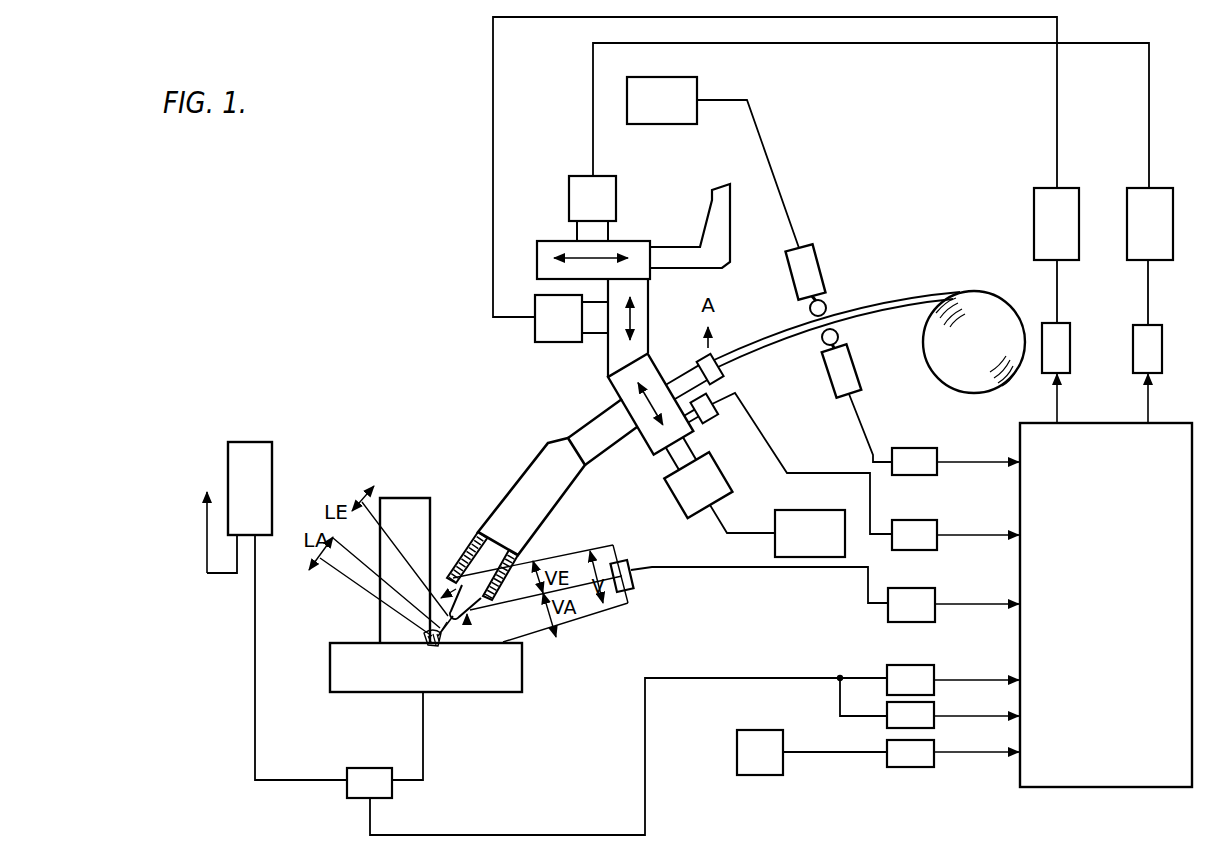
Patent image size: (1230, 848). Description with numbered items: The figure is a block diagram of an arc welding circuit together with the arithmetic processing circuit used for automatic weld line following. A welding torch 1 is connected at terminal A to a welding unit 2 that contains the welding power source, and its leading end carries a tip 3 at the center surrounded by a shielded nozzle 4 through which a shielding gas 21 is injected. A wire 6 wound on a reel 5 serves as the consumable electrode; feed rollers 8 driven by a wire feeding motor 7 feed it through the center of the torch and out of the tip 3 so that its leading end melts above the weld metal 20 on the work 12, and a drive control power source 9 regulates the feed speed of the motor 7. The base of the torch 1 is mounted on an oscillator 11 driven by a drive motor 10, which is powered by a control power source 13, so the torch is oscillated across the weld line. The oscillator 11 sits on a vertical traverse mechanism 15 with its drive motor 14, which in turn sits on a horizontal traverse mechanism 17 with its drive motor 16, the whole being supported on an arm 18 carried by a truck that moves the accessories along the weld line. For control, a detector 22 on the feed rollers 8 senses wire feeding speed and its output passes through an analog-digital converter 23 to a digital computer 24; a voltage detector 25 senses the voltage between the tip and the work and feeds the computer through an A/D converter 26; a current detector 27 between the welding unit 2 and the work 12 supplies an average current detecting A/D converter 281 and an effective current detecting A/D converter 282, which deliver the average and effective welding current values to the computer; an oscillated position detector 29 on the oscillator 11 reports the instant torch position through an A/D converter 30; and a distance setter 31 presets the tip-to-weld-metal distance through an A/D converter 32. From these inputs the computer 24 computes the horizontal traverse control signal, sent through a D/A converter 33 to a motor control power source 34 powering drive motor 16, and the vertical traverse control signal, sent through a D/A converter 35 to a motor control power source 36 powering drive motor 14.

The welding torch 1 is at (606, 420).
The welding unit 2 is at (262, 468).
The tip 3 is at (477, 552).
The shielded nozzle 4 is at (537, 478).
The reel 5 is at (1000, 308).
The wire 6 is at (467, 620).
The wire feeding motor 7 is at (813, 262).
The feed rollers 8 is at (826, 305).
The drive control power source 9 is at (688, 121).
The drive motor 10 is at (676, 496).
The oscillator 11 is at (650, 443).
The work 12 is at (386, 683).
The control power source 13 is at (815, 510).
The drive motor 14 is at (558, 337).
The vertical traverse mechanism 15 is at (645, 312).
The drive motor 16 is at (570, 197).
The horizontal traverse mechanism 17 is at (634, 243).
The arm 18 is at (733, 200).
The weld metal 20 is at (437, 647).
The shielding gas 21 is at (473, 620).
The detector 22 is at (858, 378).
The analog-digital converter 23 is at (915, 448).
The digital computer 24 is at (1086, 790).
The voltage detector 25 is at (634, 581).
The A/D converter 26 is at (915, 591).
The current detector 27 is at (357, 768).
The oscillated position detector 29 is at (711, 418).
The A/D converter 30 is at (915, 522).
The distance setter 31 is at (770, 733).
The A/D converter 32 is at (897, 767).
The D/A converter 33 is at (1072, 332).
The motor control power source 34 is at (1075, 226).
The D/A converter 35 is at (1163, 352).
The motor control power source 36 is at (1175, 228).
The average current detecting A/D converter 281 is at (900, 668).
The effective current detecting A/D converter 282 is at (887, 722).